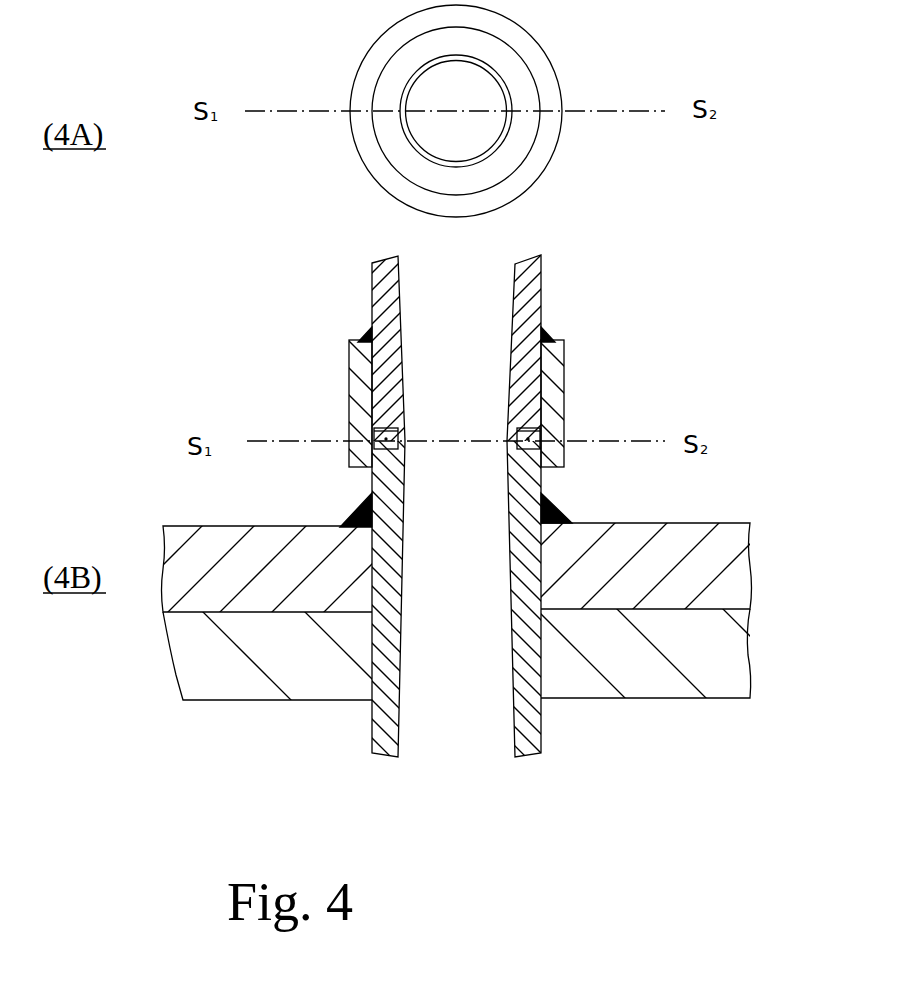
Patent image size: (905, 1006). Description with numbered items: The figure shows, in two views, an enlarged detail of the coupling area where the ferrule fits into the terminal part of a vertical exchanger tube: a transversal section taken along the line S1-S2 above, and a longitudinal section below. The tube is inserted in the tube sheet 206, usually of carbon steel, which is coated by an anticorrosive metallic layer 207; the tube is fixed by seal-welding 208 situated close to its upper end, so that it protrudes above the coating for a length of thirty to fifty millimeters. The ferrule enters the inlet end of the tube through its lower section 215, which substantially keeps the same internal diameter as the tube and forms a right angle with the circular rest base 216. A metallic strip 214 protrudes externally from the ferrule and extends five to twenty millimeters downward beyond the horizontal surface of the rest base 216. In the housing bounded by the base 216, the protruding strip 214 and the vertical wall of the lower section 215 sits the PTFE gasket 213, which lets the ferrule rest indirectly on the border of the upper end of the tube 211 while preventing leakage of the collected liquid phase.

The tube sheet 206 is at (292, 633).
The anticorrosive metallic layer 207 is at (287, 578).
The seal-welding 208 is at (357, 507).
The upper end of the tube 211 is at (528, 622).
The gasket 213 is at (409, 159).
The metallic strip 214 is at (547, 153).
The lower section 215 is at (507, 433).
The rest base 216 is at (540, 427).